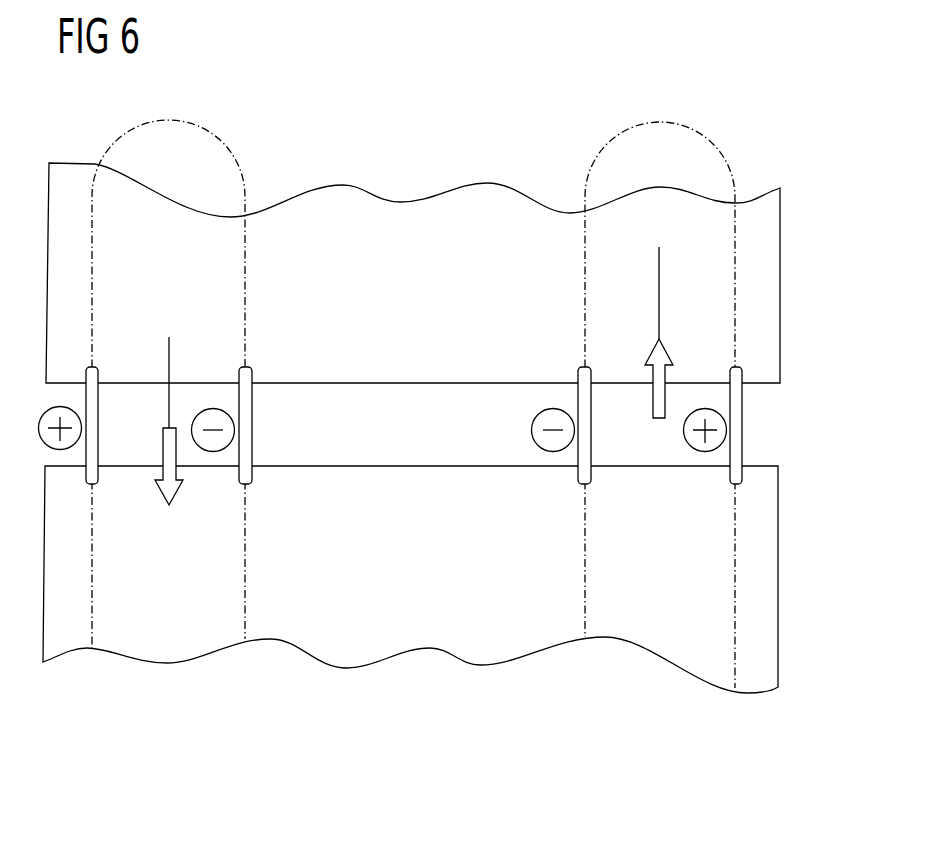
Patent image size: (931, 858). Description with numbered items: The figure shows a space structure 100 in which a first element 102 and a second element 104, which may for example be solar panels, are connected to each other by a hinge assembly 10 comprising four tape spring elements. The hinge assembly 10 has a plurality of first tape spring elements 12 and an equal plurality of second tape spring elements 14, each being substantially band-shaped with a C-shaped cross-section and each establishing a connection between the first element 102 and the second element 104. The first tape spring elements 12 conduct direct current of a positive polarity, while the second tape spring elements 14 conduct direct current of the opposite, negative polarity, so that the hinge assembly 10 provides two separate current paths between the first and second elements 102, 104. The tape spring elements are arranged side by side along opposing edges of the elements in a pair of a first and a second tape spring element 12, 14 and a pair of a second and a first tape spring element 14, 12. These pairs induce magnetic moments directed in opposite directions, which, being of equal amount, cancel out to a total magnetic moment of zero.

The space structure 100 is at (507, 137).
The first element 102 is at (403, 277).
The second element 104 is at (357, 603).
The hinge assembly 10 is at (772, 424).
The first tape spring element 12 is at (98, 474).
The second tape spring element 14 is at (252, 474).